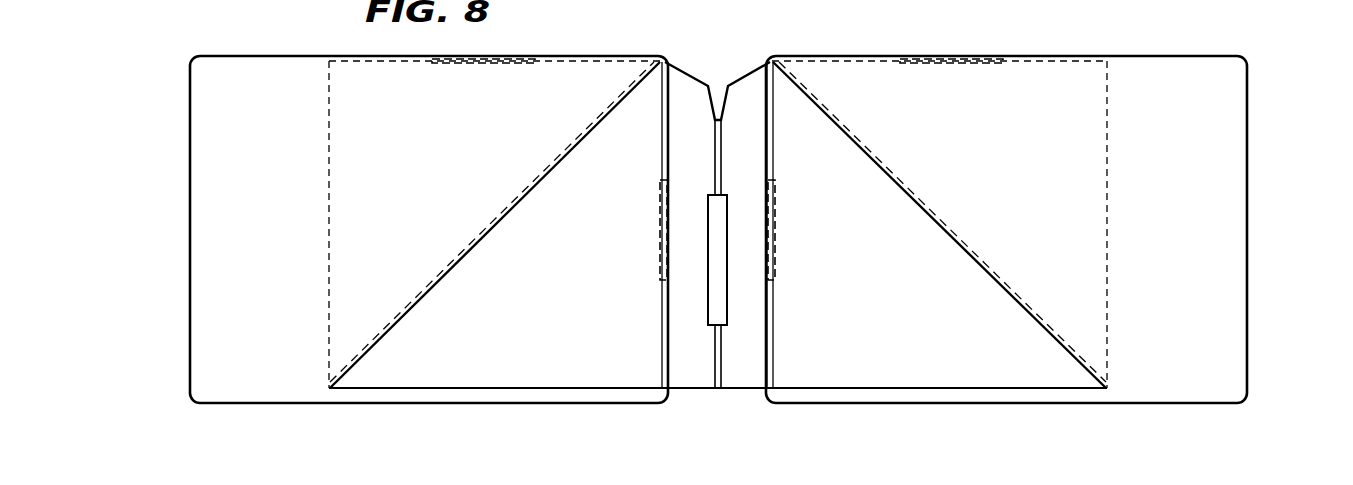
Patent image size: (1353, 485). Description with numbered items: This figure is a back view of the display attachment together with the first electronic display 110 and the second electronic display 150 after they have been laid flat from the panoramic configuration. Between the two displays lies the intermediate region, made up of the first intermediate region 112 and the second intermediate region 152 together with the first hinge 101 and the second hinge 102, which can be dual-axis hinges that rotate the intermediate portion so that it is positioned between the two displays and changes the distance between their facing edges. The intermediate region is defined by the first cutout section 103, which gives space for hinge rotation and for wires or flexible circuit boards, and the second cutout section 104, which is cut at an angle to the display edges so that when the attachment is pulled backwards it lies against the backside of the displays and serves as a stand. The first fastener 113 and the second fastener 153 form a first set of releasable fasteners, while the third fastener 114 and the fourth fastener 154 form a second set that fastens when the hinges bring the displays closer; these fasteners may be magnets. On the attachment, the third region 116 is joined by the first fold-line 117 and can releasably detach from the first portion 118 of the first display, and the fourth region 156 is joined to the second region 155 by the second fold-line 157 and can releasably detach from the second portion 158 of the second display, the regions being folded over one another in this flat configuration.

The first hinge 101 is at (722, 345).
The second hinge 102 is at (714, 147).
The first cutout section 103 is at (727, 288).
The second cutout section 104 is at (720, 57).
The first electronic display 110 is at (1210, 155).
The first intermediate region 112 is at (750, 328).
The first fastener 113 is at (953, 63).
The third fastener 114 is at (774, 218).
The third region 116 is at (941, 302).
The first fold-line 117 is at (962, 234).
The first portion 118 is at (1078, 265).
The second electronic display 150 is at (225, 155).
The second intermediate region 152 is at (685, 328).
The second fastener 153 is at (476, 63).
The fourth fastener 154 is at (662, 218).
The second region 155 is at (463, 398).
The fourth region 156 is at (495, 302).
The second fold-line 157 is at (474, 234).
The second portion 158 is at (358, 265).